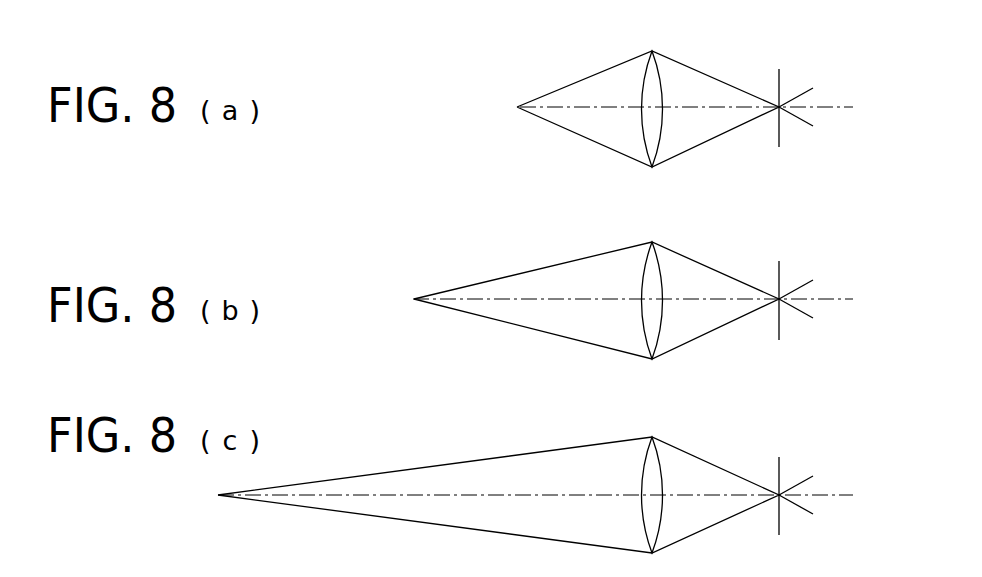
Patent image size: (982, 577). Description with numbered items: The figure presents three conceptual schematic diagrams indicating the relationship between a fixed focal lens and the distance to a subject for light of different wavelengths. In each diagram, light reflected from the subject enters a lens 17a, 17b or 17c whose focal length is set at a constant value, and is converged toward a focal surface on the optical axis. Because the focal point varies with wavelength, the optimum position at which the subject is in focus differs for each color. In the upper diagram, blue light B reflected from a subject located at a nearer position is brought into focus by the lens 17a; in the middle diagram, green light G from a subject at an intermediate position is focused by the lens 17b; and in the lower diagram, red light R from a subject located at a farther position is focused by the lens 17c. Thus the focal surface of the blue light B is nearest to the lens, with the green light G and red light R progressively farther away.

The lens 17a is at (653, 70).
The lens 17b is at (653, 261).
The lens 17c is at (653, 456).
The blue light B is at (803, 108).
The green light G is at (804, 300).
The red light R is at (804, 496).